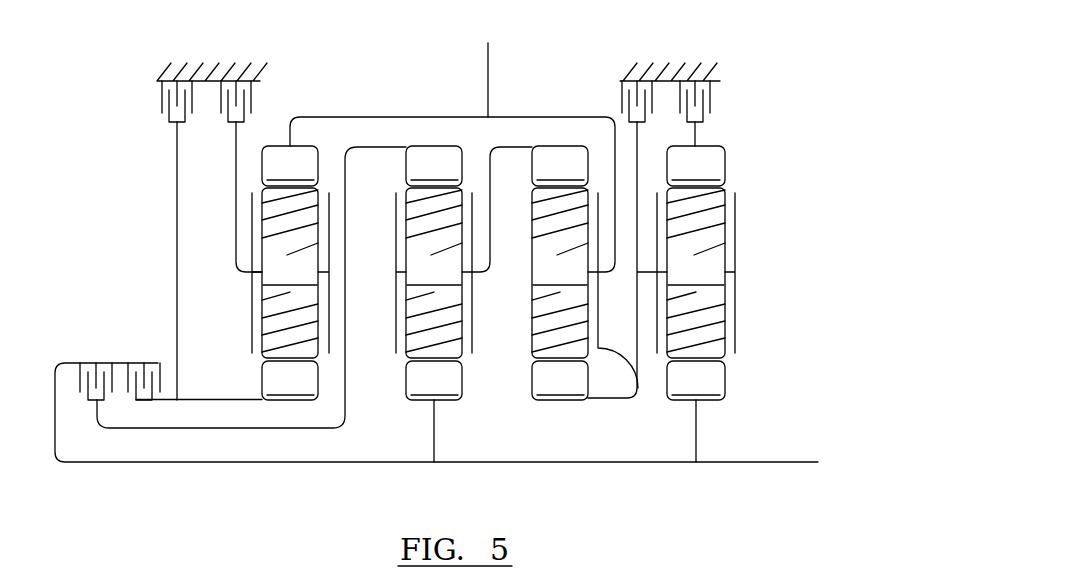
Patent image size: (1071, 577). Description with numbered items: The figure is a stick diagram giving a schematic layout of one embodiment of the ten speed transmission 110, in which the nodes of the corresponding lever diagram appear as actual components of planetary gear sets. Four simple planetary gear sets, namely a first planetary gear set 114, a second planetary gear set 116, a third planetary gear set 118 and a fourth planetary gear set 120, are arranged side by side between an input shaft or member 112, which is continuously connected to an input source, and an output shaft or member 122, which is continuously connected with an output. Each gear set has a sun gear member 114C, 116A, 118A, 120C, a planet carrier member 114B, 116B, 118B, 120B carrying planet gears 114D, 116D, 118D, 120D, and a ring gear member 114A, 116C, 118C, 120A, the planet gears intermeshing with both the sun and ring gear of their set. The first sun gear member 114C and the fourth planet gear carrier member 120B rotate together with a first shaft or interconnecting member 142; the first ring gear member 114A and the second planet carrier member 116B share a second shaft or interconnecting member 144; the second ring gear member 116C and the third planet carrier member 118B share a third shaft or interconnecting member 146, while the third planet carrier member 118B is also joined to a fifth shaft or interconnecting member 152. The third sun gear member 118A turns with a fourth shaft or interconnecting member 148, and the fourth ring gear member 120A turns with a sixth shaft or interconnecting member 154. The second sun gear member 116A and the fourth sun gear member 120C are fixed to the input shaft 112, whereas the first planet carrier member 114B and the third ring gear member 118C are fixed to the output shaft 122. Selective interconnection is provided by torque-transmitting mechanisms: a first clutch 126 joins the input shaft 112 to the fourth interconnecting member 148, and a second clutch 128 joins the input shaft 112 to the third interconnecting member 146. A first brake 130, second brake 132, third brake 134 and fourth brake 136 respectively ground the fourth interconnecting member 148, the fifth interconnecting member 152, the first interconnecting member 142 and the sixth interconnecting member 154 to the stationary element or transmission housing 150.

The ten speed transmission 110 is at (748, 46).
The input shaft or member 112 is at (103, 464).
The first planetary gear set 114 is at (581, 301).
The first ring gear member 114A is at (560, 166).
The first planet carrier member 114B is at (634, 313).
The first sun gear member 114C is at (560, 380).
The planet gears 114D is at (560, 273).
The second planetary gear set 116 is at (453, 330).
The second sun gear member 116A is at (434, 411).
The second planet carrier member 116B is at (472, 302).
The second ring gear member 116C is at (434, 166).
The planet gears 116D is at (434, 273).
The third planetary gear set 118 is at (293, 330).
The third sun gear member 118A is at (290, 380).
The third planet carrier member 118B is at (330, 222).
The third ring gear member 118C is at (290, 166).
The planet gears 118D is at (290, 273).
The fourth planetary gear set 120 is at (731, 330).
The fourth ring gear member 120A is at (696, 166).
The fourth planet gear carrier member 120B is at (736, 243).
The fourth sun gear member 120C is at (696, 411).
The planet gears 120D is at (696, 273).
The output shaft or member 122 is at (489, 94).
The first clutch 126 is at (160, 380).
The second clutch 128 is at (140, 360).
The first brake 130 is at (160, 101).
The second brake 132 is at (221, 108).
The third brake 134 is at (621, 100).
The fourth brake 136 is at (713, 100).
The first shaft or interconnecting member 142 is at (600, 403).
The second shaft or interconnecting member 144 is at (490, 174).
The third shaft or interconnecting member 146 is at (346, 345).
The fourth shaft or interconnecting member 148 is at (207, 402).
The stationary element or transmission housing 150 is at (266, 73).
The fifth shaft or interconnecting member 152 is at (235, 183).
The sixth shaft or interconnecting member 154 is at (700, 136).